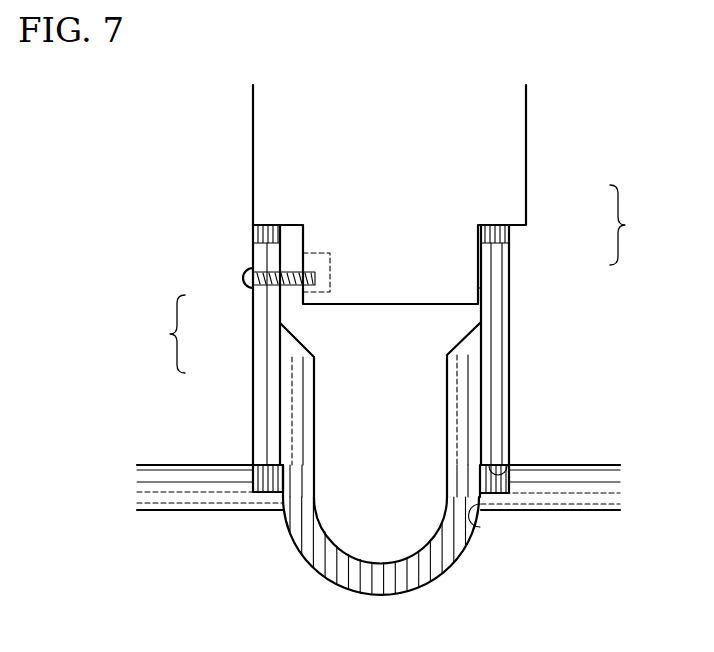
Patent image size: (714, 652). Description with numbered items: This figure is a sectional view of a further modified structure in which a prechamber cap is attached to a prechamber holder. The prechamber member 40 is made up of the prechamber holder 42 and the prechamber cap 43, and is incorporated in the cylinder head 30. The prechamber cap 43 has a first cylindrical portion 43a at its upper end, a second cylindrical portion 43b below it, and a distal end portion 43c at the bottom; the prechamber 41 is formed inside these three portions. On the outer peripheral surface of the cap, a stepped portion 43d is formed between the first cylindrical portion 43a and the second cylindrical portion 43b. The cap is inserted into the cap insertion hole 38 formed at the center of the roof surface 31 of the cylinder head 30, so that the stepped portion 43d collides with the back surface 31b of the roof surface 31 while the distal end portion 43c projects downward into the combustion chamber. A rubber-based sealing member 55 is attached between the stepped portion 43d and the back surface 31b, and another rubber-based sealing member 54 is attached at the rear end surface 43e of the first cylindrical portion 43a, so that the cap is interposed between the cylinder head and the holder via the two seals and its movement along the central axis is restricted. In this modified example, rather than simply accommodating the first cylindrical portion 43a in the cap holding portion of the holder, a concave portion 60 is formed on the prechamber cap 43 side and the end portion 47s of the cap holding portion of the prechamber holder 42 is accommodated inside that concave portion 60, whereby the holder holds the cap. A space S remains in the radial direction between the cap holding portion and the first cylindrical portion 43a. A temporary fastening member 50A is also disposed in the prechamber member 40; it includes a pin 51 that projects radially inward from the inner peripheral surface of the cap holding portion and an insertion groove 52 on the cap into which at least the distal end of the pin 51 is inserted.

The cylinder head 30 is at (633, 567).
The roof surface 31 is at (153, 512).
The back surface 31b is at (147, 464).
The cap insertion hole 38 is at (478, 527).
The prechamber member 40 is at (631, 225).
The prechamber 41 is at (555, 382).
The prechamber holder 42 is at (527, 187).
The prechamber cap 43 is at (508, 273).
The first cylindrical portion 43a is at (254, 368).
The second cylindrical portion 43b is at (282, 502).
The distal end portion 43c is at (337, 585).
The stepped portion 43d is at (507, 482).
The rear end surface 43e is at (267, 237).
The end portion of the cap holding portion 47s is at (478, 288).
The temporary fastening member 50A is at (152, 334).
The pin 51 is at (260, 286).
The insertion groove 52 is at (330, 292).
The sealing member 54 is at (273, 234).
The sealing member 55 is at (252, 483).
The concave portion 60 is at (481, 268).
The space S is at (293, 252).